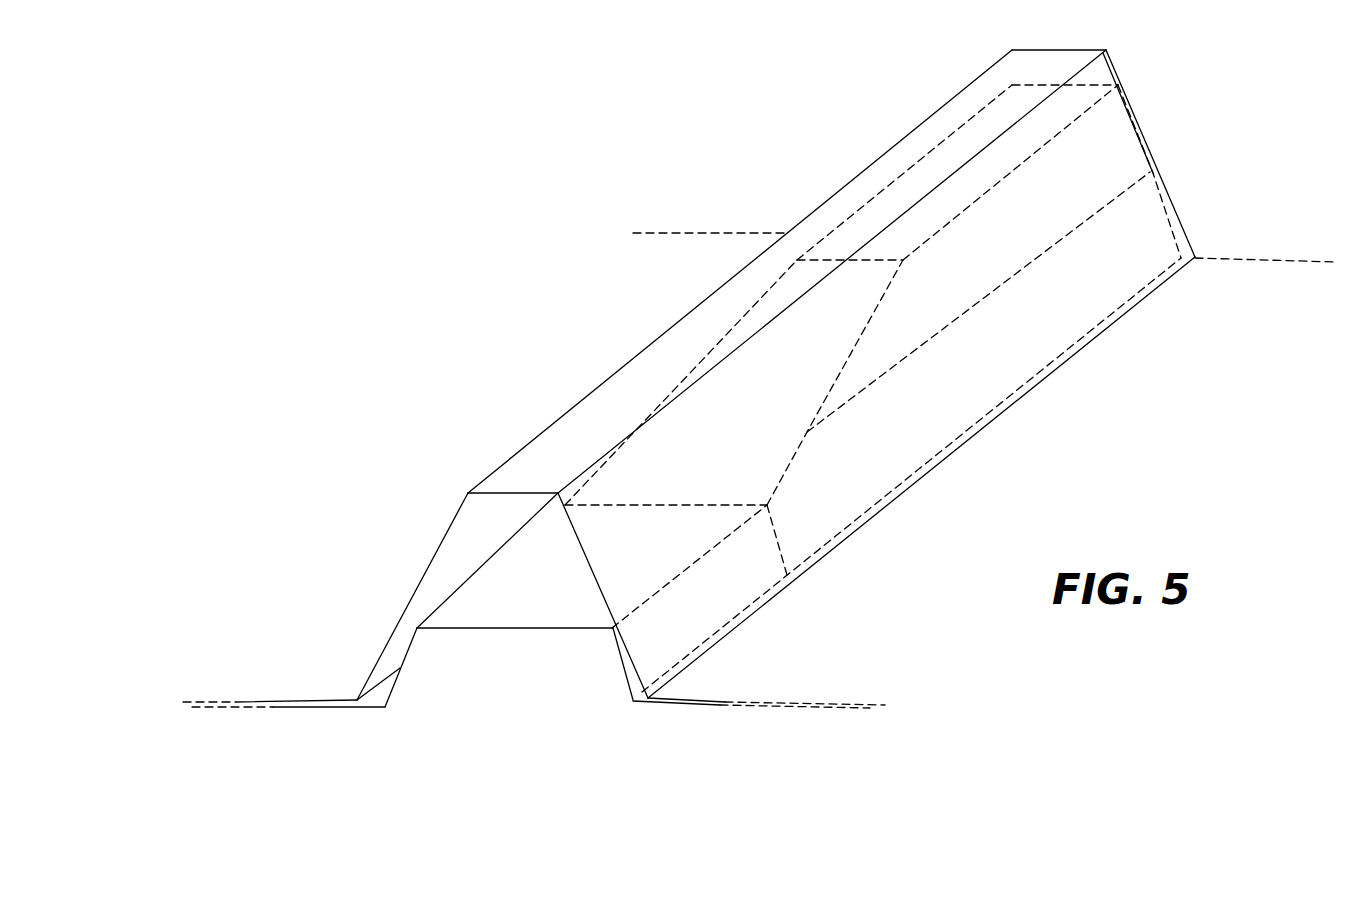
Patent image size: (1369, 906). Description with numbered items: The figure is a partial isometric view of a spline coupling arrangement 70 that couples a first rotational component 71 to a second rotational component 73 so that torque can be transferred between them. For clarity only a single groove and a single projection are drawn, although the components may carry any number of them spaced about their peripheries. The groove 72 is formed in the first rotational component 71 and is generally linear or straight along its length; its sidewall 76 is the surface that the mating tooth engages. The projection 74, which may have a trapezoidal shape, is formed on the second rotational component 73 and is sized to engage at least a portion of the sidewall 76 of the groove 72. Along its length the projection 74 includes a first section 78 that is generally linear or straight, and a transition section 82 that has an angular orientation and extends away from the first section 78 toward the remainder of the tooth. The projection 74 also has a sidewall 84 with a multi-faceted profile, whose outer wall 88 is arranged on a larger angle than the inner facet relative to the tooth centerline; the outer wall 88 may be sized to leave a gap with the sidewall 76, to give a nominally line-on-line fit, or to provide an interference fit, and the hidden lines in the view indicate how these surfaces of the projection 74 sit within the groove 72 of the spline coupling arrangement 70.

The spline coupling arrangement 70 is at (538, 222).
The first rotational component 71 is at (215, 702).
The groove 72 is at (497, 512).
The second rotational component 73 is at (210, 708).
The projection 74 is at (483, 670).
The sidewall 76 is at (447, 568).
The first section 78 is at (630, 670).
The transition section 82 is at (763, 415).
The sidewall 84 is at (1007, 347).
The outer wall 88 is at (1070, 165).